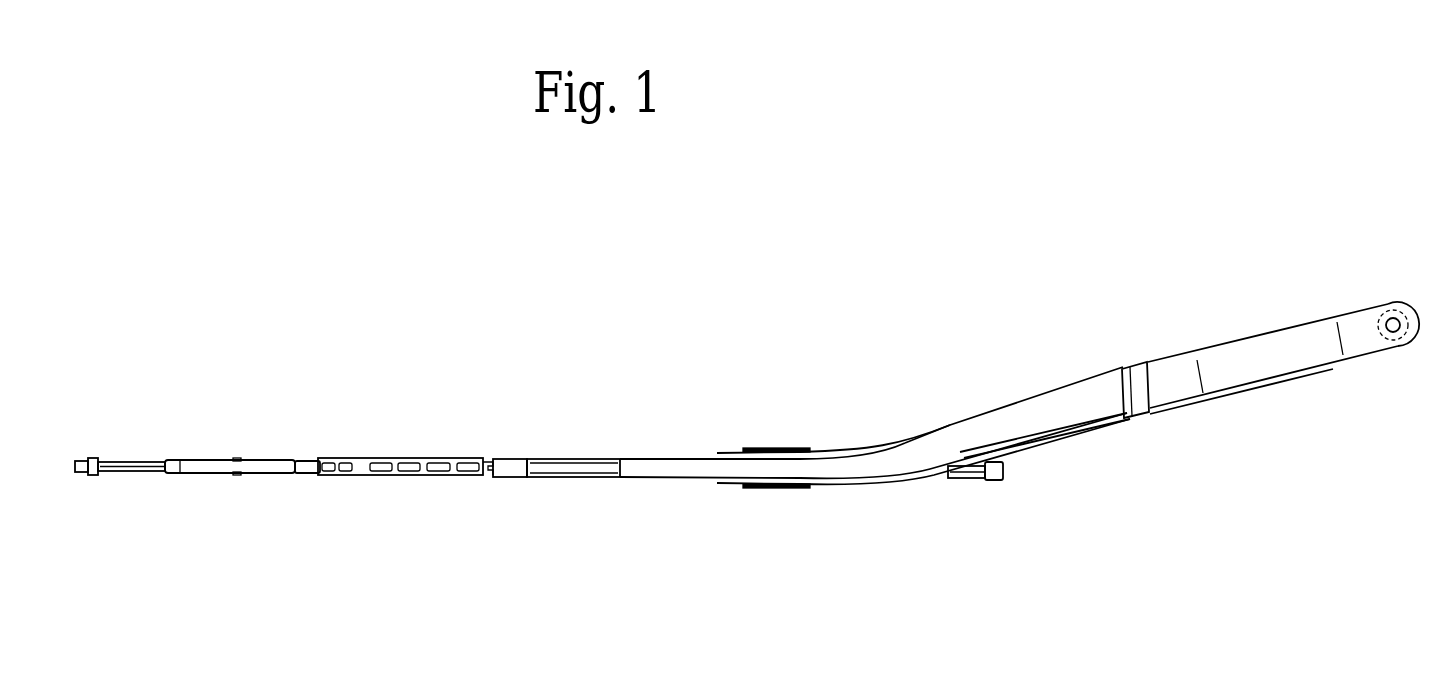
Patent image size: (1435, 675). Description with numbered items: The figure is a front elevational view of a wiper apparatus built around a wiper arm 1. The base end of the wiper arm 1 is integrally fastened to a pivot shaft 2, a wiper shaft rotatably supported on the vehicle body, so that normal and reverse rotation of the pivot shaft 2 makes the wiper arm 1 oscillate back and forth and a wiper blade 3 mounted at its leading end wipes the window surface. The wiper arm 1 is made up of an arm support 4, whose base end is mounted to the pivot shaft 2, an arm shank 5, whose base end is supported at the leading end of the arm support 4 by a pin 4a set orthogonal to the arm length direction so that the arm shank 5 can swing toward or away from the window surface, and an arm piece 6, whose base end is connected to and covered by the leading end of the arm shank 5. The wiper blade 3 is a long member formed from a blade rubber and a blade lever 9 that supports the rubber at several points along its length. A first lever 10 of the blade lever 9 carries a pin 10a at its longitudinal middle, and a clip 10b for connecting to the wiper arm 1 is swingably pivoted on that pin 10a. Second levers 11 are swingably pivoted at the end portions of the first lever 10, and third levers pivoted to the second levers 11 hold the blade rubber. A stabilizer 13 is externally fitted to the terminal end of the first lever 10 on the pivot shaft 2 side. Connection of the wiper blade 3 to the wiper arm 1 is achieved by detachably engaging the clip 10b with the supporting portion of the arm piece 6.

The wiper arm 1 is at (1000, 212).
The pivot shaft 2 is at (1385, 300).
The wiper blade 3 is at (375, 400).
The arm support 4 is at (1270, 365).
The pin 4a is at (1138, 418).
The arm shank 5 is at (1058, 410).
The arm piece 6 is at (578, 460).
The blade lever 9 is at (418, 455).
The first lever 10 is at (452, 480).
The pin 10a is at (535, 480).
The clip 10b is at (510, 460).
The second levers 11 is at (266, 476).
The stabilizer 13 is at (768, 445).